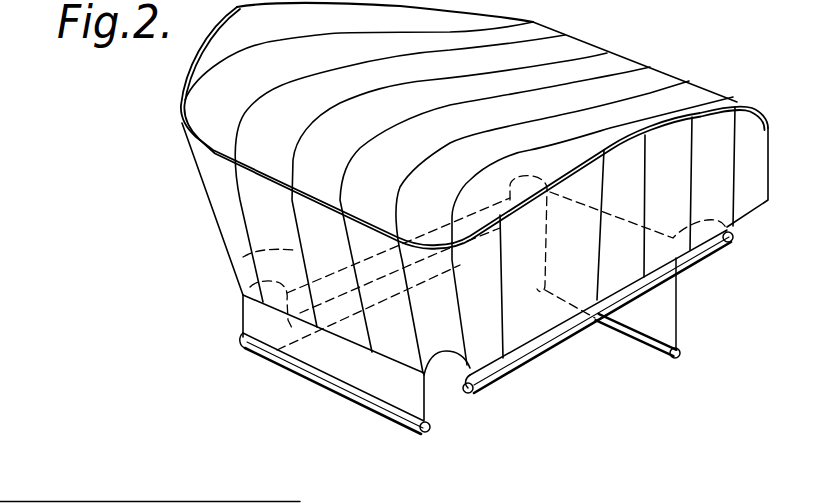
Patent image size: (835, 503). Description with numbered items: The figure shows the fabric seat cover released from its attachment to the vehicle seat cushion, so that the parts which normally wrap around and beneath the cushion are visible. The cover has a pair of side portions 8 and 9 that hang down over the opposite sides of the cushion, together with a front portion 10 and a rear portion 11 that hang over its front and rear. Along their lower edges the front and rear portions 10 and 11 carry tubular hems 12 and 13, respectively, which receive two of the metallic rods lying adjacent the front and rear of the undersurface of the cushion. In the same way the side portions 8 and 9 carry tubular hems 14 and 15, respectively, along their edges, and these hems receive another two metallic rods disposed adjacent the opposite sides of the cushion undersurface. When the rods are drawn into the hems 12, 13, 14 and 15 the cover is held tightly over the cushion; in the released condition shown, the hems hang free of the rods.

The side portion 8 is at (466, 383).
The side portion 9 is at (243, 257).
The front portion 10 is at (245, 305).
The rear portion 11 is at (658, 297).
The tubular hem 12 is at (340, 387).
The tubular hem 13 is at (683, 351).
The tubular hem 14 is at (500, 372).
The tubular hem 15 is at (277, 350).